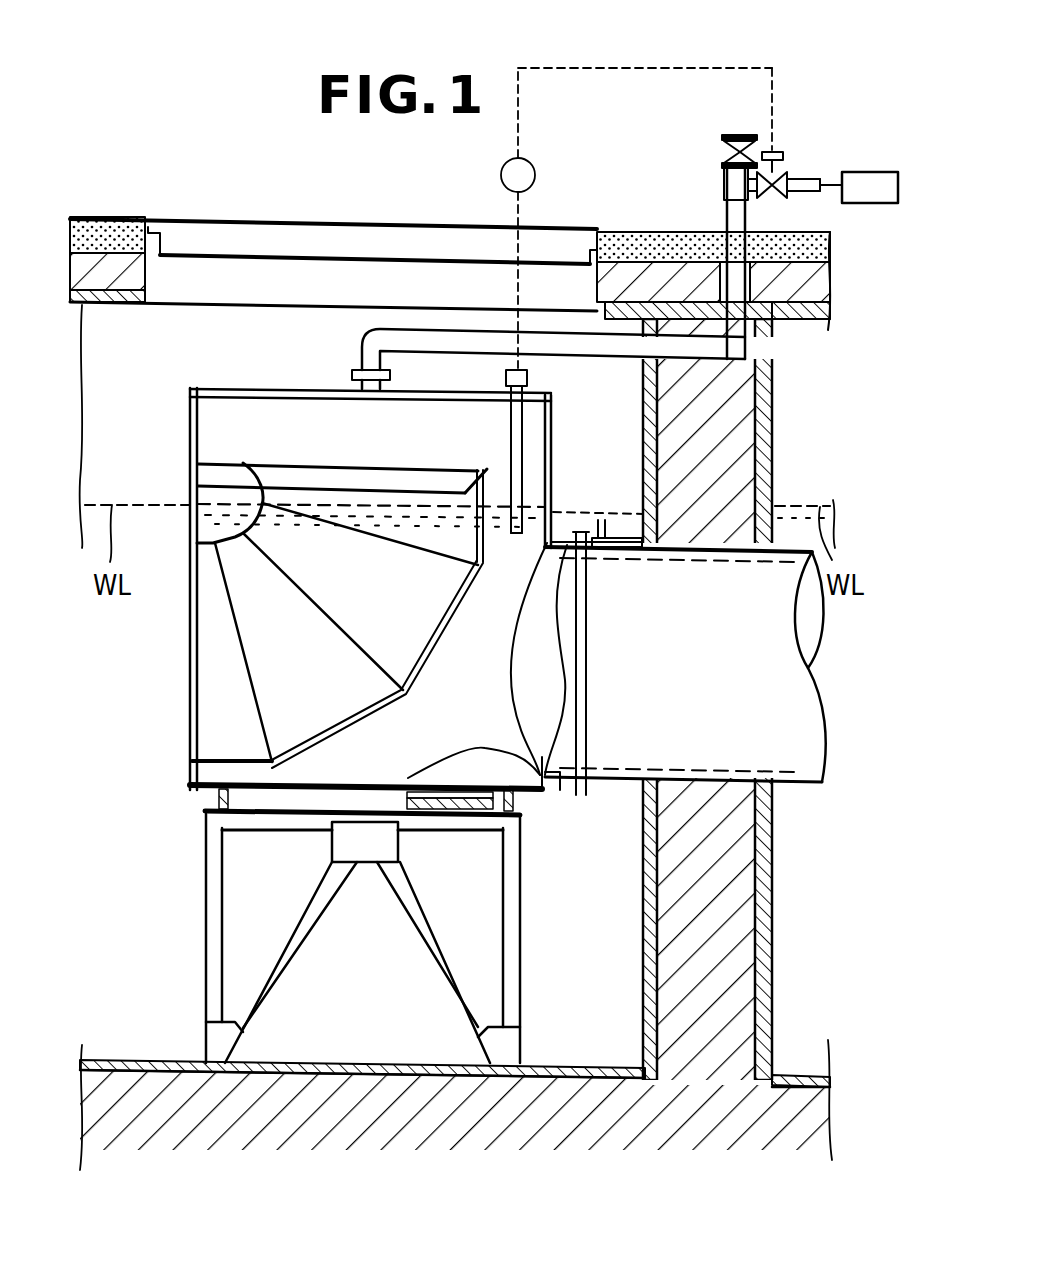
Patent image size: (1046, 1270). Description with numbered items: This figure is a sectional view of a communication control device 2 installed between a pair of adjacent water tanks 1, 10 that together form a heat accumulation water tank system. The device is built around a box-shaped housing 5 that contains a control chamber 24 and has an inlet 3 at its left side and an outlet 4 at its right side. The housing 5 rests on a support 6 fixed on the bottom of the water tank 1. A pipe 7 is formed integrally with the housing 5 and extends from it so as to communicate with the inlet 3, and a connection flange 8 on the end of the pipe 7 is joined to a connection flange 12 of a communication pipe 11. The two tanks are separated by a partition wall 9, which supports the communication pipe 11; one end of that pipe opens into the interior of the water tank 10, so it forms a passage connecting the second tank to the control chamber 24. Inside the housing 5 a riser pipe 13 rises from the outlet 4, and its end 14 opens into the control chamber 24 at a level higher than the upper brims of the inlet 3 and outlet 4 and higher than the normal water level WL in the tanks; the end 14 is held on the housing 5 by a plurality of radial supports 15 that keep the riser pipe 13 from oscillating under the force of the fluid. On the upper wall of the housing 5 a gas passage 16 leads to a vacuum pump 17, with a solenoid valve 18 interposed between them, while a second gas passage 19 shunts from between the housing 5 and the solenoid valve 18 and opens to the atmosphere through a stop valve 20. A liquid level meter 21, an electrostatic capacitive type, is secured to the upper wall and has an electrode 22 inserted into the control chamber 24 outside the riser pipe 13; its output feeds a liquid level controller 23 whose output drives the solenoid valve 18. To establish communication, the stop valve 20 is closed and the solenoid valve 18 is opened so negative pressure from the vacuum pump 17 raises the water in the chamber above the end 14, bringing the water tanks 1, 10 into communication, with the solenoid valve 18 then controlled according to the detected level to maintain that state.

The water tank 1 is at (157, 1045).
The communication control device 2 is at (228, 386).
The inlet 3 is at (550, 543).
The outlet 4 is at (196, 572).
The housing 5 is at (315, 388).
The support 6 is at (207, 876).
The pipe 7 is at (550, 787).
The connection flange 8 is at (583, 530).
The partition wall 9 is at (655, 960).
The water tank 10 is at (795, 1018).
The communication pipe 11 is at (792, 785).
The connection flange 12 is at (606, 530).
The riser pipe 13 is at (365, 702).
The end 14 is at (257, 478).
The radial supports 15 is at (227, 471).
The gas passage 16 is at (362, 348).
The vacuum pump 17 is at (880, 205).
The solenoid valve 18 is at (784, 175).
The gas passage 19 is at (723, 176).
The stop valve 20 is at (724, 140).
The liquid level meter 21 is at (505, 378).
The electrode 22 is at (503, 484).
The liquid level controller 23 is at (500, 178).
The control chamber 24 is at (447, 456).